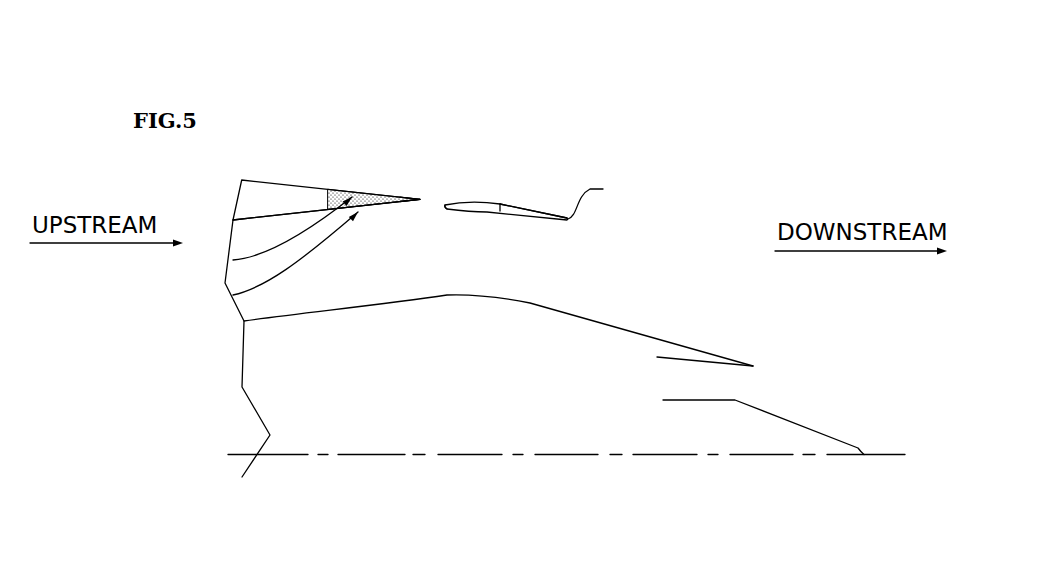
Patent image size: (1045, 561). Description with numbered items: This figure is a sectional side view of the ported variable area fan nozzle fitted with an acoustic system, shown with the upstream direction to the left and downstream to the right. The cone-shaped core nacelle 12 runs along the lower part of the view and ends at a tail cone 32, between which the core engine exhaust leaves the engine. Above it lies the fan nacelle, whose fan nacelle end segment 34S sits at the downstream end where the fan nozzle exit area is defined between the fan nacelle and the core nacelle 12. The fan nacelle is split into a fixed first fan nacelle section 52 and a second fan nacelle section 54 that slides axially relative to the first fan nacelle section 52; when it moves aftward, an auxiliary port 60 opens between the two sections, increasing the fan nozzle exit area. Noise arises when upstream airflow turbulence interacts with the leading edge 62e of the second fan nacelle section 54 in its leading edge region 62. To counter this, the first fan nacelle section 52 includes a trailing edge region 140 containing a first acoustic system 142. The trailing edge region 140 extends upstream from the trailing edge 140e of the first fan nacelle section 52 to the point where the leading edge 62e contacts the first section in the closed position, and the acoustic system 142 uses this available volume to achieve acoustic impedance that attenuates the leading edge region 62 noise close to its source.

The core nacelle 12 is at (668, 333).
The tail cone 32 is at (797, 423).
The first fan nacelle section 52 is at (282, 179).
The second fan nacelle section 54 is at (530, 205).
The auxiliary port 60 is at (433, 207).
The leading edge region 62 is at (482, 202).
The leading edge 62e is at (443, 198).
The trailing edge region 140 is at (233, 295).
The trailing edge 140e is at (417, 190).
The first acoustic system 142 is at (233, 260).
The fan nacelle end segment 34S is at (609, 200).